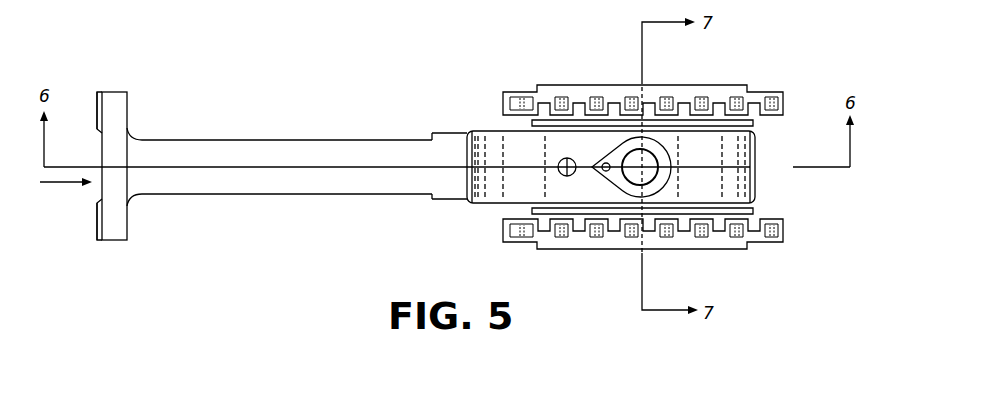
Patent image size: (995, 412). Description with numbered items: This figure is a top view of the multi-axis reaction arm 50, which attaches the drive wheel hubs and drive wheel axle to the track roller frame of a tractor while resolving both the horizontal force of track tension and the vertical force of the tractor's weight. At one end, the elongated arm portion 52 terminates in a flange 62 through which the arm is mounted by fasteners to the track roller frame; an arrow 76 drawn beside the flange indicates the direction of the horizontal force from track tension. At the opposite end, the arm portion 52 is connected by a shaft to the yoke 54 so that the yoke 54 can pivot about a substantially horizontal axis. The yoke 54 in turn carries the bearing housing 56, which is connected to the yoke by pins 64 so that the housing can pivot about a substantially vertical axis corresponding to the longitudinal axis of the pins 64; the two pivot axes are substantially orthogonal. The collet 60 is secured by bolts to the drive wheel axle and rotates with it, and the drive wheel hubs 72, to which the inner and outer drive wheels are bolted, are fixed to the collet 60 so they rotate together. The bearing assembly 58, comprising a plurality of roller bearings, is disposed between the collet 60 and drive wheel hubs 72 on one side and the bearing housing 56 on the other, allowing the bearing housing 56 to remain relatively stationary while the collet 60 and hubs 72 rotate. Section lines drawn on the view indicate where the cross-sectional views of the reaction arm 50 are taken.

The multi-axis reaction arm 50 is at (343, 58).
The arm portion 52 is at (300, 158).
The yoke 54 is at (498, 153).
The bearing housing 56 is at (703, 192).
The bearing assembly 58 is at (755, 131).
The collet 60 is at (773, 226).
The flange 62 is at (117, 120).
The pins 64 is at (637, 170).
The drive wheel hubs 72 is at (768, 90).
The arrow 76 is at (60, 183).